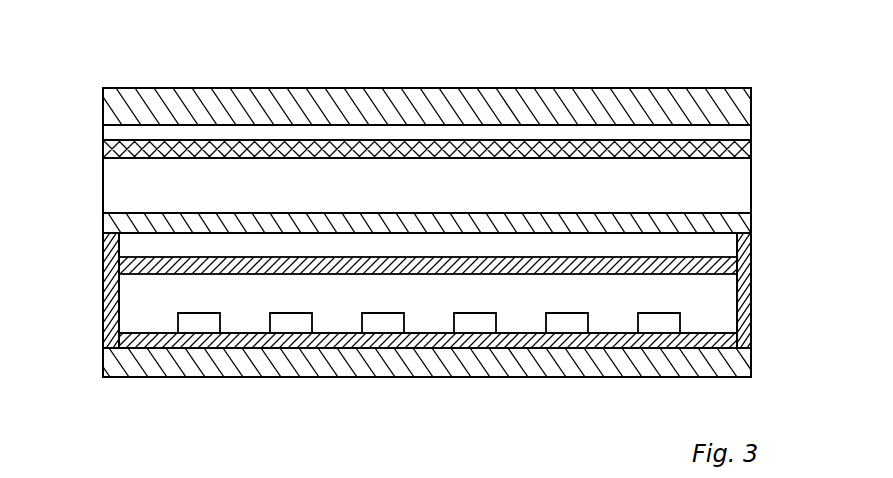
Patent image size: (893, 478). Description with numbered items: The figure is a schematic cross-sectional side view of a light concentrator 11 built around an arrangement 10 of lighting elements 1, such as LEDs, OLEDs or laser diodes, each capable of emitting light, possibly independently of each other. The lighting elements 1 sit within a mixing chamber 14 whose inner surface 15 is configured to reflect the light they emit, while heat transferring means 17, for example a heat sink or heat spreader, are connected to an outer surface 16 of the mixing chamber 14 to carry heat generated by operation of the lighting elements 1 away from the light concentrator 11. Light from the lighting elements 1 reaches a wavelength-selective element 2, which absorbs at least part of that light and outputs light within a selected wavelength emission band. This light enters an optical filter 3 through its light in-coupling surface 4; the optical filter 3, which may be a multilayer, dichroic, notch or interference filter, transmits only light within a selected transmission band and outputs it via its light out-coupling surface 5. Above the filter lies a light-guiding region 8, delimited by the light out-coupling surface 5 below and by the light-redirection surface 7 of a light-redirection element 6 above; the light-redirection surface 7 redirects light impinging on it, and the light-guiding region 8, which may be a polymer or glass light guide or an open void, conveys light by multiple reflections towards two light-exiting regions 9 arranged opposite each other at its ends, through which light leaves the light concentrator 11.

The lighting elements 1 is at (665, 313).
The wavelength-selective element 2 is at (167, 277).
The optical filter 3 is at (104, 225).
The light in-coupling surface 4 is at (123, 272).
The light out-coupling surface 5 is at (123, 225).
The light-redirection element 6 is at (208, 150).
The light-redirection surface 7 is at (165, 157).
The light-guiding region 8 is at (543, 190).
The light-exiting regions 9 is at (751, 182).
The arrangement 10 is at (778, 258).
The light concentrator 11 is at (799, 97).
The mixing chamber 14 is at (645, 132).
The inner surface 15 is at (403, 152).
The outer surface 16 is at (468, 123).
The heat transferring means 17 is at (143, 103).